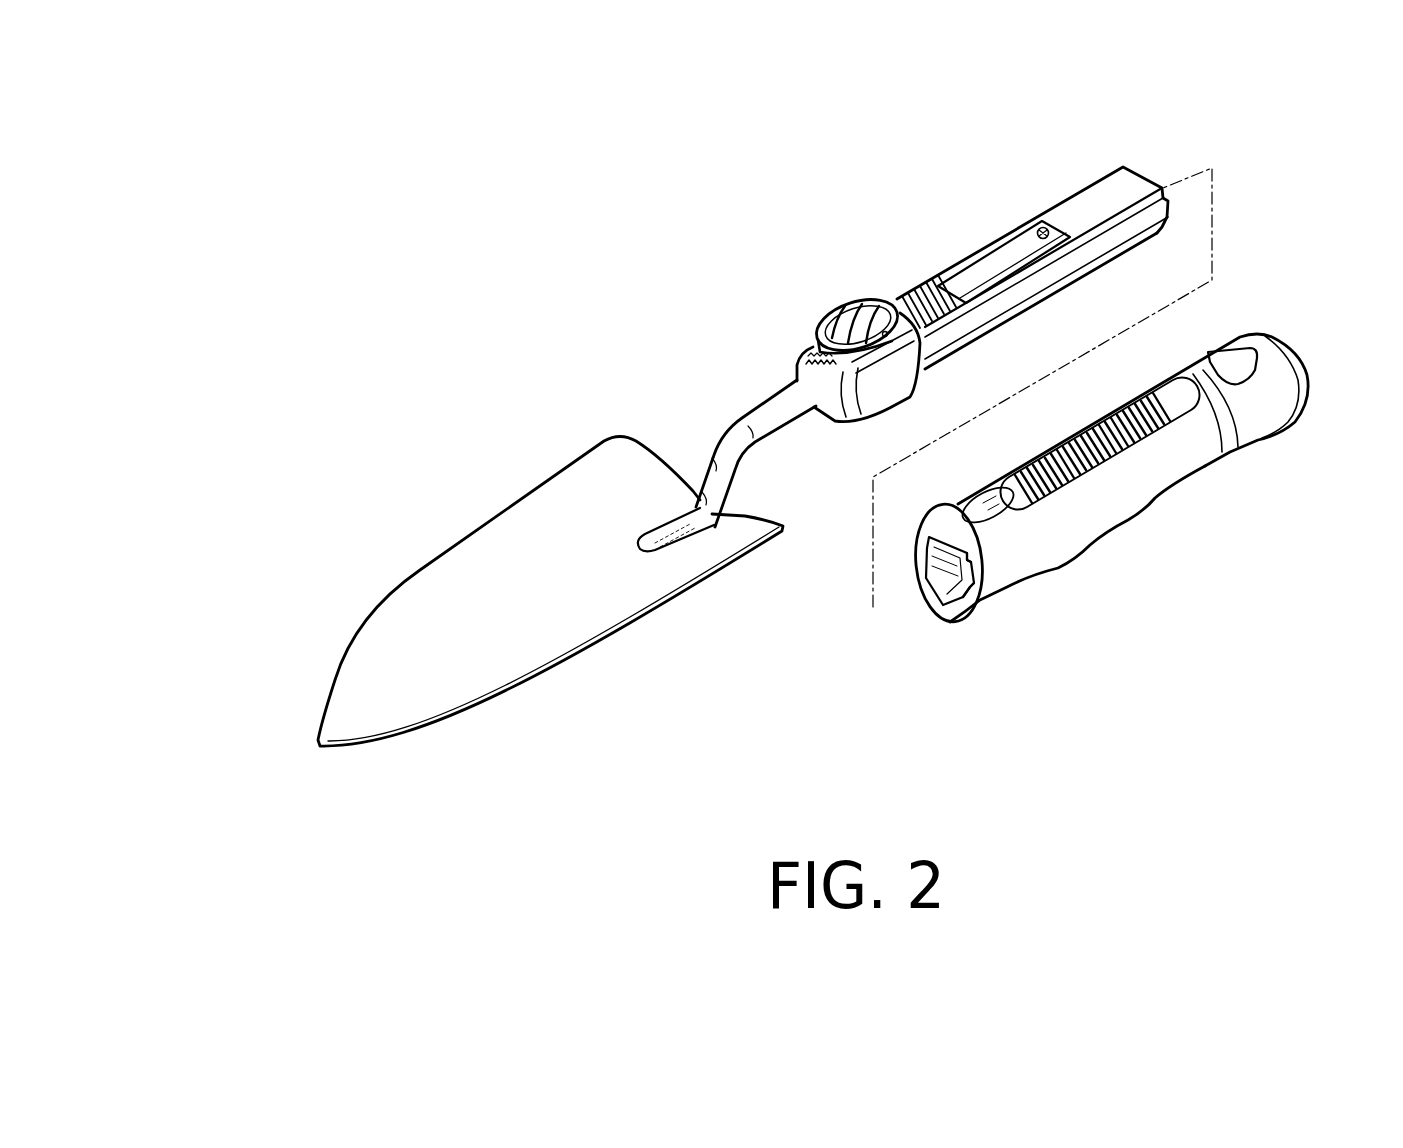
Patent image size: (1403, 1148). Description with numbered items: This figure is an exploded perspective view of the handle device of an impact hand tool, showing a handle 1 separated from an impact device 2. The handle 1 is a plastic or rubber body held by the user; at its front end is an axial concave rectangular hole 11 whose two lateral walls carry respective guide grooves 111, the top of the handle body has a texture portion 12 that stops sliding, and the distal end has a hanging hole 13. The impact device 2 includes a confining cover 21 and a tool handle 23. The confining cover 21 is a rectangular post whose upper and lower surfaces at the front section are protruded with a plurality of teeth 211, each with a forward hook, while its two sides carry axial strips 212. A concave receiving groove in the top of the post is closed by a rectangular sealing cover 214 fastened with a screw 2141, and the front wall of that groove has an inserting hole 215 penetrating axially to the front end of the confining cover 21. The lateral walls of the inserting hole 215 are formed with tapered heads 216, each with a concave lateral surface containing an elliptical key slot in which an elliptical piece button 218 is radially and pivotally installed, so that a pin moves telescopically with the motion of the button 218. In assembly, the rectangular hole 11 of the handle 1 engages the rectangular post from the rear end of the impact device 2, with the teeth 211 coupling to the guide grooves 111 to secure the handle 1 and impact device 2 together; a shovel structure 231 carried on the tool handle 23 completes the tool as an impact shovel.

The handle 1 is at (1135, 549).
The rectangular hole 11 is at (950, 584).
The guide grooves 111 is at (970, 584).
The texture portion 12 is at (1097, 421).
The hanging hole 13 is at (1237, 362).
The impact device 2 is at (812, 292).
The confining cover 21 is at (1127, 188).
The teeth 211 is at (928, 297).
The axial strips 212 is at (1127, 236).
The sealing cover 214 is at (1008, 253).
The screw 2141 is at (1043, 226).
The inserting hole 215 is at (807, 360).
The tapered heads 216 is at (880, 413).
The button 218 is at (867, 300).
The tool handle 23 is at (718, 443).
The shovel structure 231 is at (438, 585).